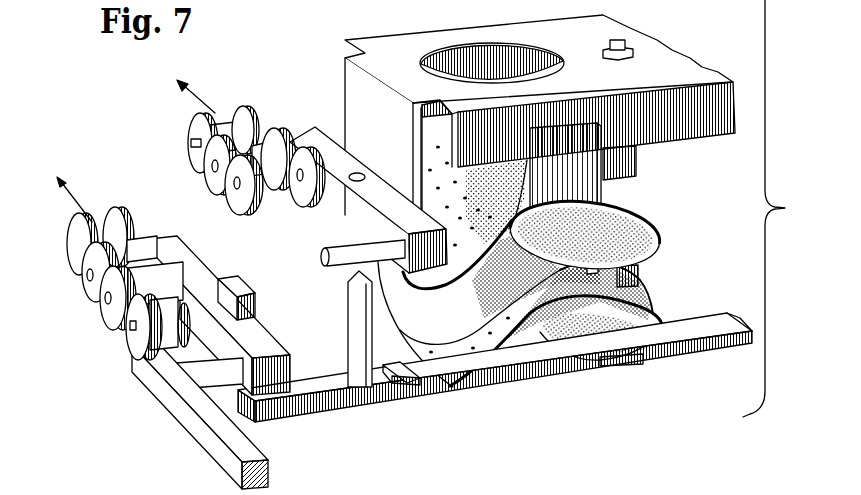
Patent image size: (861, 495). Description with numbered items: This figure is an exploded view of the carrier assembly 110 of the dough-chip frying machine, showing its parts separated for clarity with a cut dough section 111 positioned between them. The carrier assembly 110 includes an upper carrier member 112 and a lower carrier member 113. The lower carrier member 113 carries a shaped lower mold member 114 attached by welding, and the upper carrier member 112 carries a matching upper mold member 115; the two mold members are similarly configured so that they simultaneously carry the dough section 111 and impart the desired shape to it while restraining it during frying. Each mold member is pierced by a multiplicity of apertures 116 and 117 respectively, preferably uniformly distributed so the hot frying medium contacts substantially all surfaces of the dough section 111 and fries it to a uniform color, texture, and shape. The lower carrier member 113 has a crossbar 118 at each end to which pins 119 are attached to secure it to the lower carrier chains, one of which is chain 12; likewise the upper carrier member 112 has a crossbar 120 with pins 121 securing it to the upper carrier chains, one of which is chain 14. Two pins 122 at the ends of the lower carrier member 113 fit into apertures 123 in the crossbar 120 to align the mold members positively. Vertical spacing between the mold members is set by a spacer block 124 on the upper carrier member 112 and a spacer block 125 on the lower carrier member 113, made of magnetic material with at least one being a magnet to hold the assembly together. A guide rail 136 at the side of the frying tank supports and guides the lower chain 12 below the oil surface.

The lower carrier chain 12 is at (95, 294).
The upper carrier chain 14 is at (193, 133).
The carrier assembly 110 is at (782, 208).
The cut dough section 111 is at (447, 324).
The upper carrier member 112 is at (380, 45).
The lower carrier member 113 is at (343, 405).
The lower mold member 114 is at (456, 382).
The upper mold member 115 is at (650, 252).
The aperture 116 is at (458, 362).
The aperture 117 is at (489, 240).
The crossbar 118 is at (290, 380).
The pin 119 is at (173, 381).
The crossbar 120 is at (360, 184).
The pin 121 is at (321, 257).
The pin 122 is at (348, 307).
The aperture 123 is at (346, 172).
The spacer block 124 is at (623, 165).
The spacer block 125 is at (637, 277).
The guide rail 136 is at (222, 455).